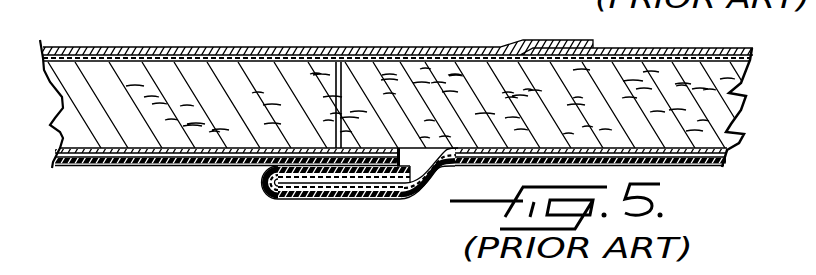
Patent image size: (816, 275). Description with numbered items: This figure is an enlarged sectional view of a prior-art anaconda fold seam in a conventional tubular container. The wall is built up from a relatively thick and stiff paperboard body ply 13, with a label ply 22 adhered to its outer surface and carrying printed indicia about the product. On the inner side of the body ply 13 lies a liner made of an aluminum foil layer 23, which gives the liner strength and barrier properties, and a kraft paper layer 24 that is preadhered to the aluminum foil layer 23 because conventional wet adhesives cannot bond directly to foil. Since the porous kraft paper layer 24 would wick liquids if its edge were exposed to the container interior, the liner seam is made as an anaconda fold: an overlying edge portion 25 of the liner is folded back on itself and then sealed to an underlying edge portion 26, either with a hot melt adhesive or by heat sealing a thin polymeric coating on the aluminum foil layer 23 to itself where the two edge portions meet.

The label ply 22 is at (158, 47).
The paperboard body ply 13 is at (258, 72).
The kraft paper layer 24 is at (726, 132).
The aluminum foil layer 23 is at (700, 168).
The overlying edge portion 25 is at (330, 200).
The underlying edge portion 26 is at (290, 150).